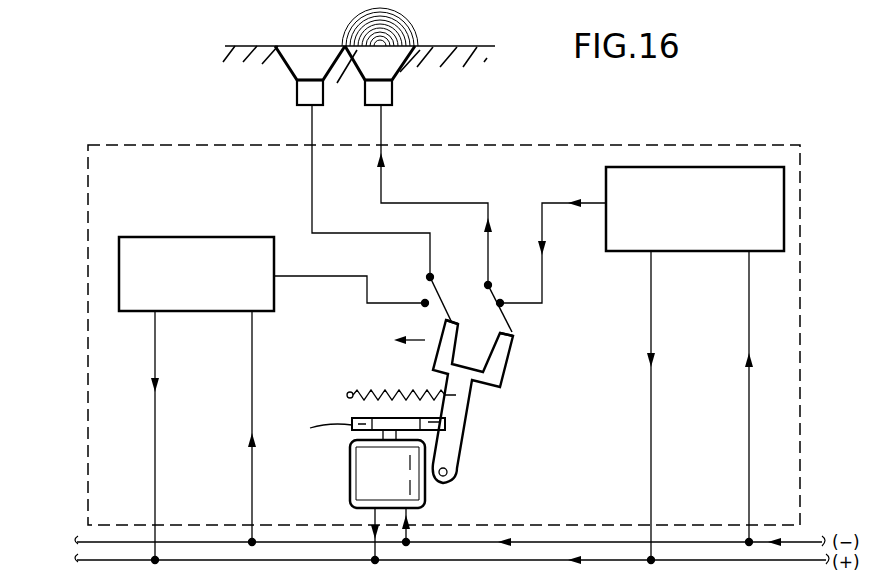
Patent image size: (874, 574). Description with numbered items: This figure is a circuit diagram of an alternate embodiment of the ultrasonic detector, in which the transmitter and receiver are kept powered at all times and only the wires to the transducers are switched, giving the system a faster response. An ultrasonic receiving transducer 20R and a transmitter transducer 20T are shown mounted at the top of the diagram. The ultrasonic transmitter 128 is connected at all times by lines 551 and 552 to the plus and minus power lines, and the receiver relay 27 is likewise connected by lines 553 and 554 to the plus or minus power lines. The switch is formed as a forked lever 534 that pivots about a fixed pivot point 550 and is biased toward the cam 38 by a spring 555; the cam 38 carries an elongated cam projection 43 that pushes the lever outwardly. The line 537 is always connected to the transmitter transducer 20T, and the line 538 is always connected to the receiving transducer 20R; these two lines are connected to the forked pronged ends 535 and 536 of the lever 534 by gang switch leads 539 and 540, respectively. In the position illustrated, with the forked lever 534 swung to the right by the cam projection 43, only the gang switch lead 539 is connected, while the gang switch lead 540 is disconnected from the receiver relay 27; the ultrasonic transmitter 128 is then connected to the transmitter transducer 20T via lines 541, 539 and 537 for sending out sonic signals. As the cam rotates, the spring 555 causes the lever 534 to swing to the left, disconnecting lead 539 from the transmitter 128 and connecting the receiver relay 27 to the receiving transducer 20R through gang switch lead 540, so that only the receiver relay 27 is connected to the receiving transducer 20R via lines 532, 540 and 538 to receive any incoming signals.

The ultrasonic receiving transducer 20R is at (293, 50).
The transmitter transducer 20T is at (407, 47).
The receiver relay 27 is at (119, 268).
The cam 38 is at (352, 462).
The cam projection 43 is at (445, 425).
The ultrasonic transmitter 128 is at (696, 167).
The line 532 is at (352, 287).
The forked lever 534 is at (500, 378).
The forked pronged end 535 is at (506, 348).
The forked pronged end 536 is at (447, 330).
The line 537 is at (490, 240).
The line 538 is at (312, 208).
The gang switch lead 539 is at (490, 295).
The gang switch lead 540 is at (428, 290).
The line 541 is at (558, 195).
The fixed pivot point 550 is at (449, 472).
The line 551 is at (652, 298).
The line 552 is at (749, 425).
The line 553 is at (158, 368).
The line 554 is at (252, 400).
The spring 555 is at (388, 396).